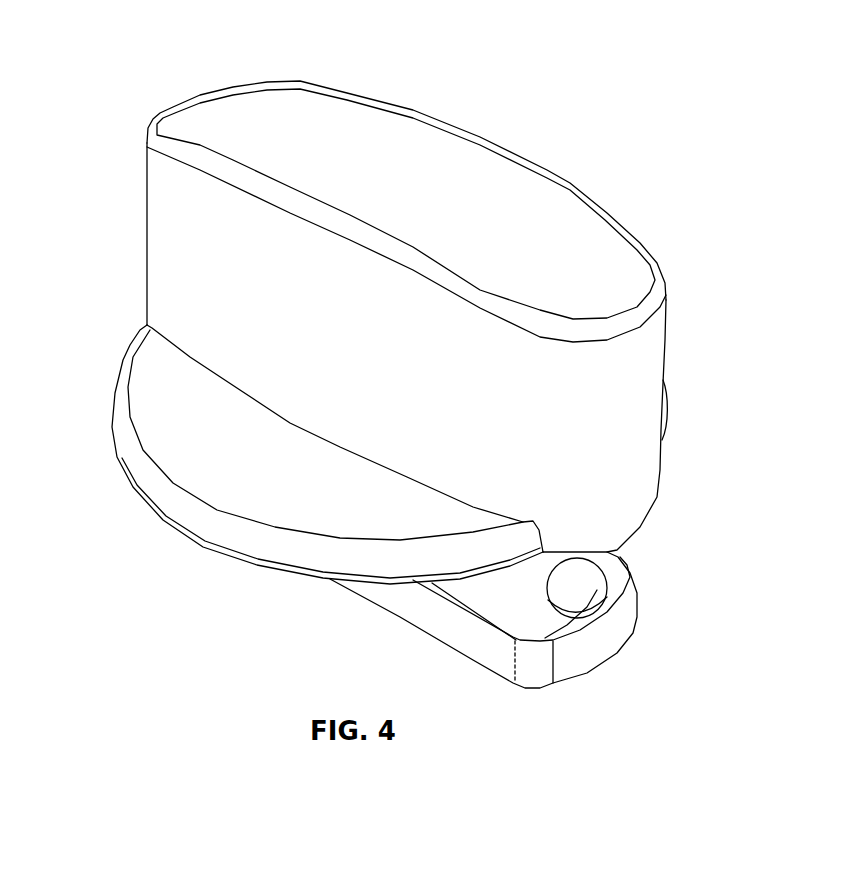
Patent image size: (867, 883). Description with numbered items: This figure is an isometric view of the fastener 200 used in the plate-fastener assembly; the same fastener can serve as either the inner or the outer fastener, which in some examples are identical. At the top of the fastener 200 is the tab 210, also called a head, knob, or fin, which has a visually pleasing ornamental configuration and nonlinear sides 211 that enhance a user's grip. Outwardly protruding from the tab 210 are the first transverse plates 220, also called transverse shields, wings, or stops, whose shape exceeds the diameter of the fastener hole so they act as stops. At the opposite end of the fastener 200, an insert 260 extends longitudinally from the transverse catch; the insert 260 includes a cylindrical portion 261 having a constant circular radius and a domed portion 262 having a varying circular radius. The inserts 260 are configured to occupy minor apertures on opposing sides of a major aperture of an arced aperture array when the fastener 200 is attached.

The fastener 200 is at (137, 56).
The tab 210 is at (549, 175).
The nonlinear sides 211 is at (197, 260).
The first transverse plates 220 is at (669, 418).
The inserts 260 is at (606, 576).
The cylindrical portion 261 is at (560, 610).
The domed portion 262 is at (598, 590).